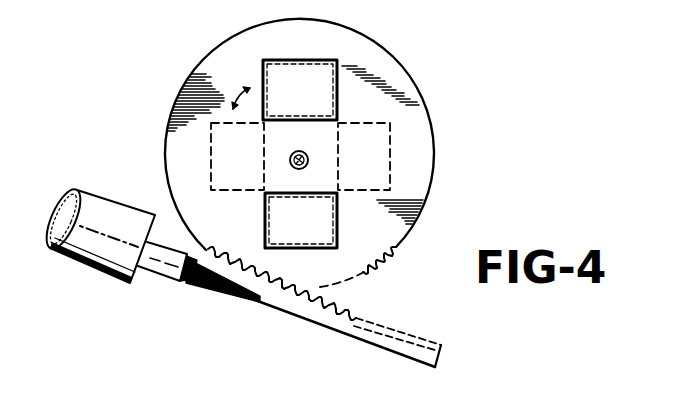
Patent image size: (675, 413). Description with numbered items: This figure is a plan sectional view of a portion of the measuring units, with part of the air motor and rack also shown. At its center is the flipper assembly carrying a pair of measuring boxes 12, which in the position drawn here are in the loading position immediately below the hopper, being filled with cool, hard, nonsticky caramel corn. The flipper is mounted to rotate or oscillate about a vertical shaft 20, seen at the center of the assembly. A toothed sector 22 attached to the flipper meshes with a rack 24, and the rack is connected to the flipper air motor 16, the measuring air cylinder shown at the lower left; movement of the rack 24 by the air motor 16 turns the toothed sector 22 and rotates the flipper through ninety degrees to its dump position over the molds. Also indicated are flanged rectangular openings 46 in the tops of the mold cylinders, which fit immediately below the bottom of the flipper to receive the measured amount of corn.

The measuring boxes 12 is at (303, 60).
The flipper air motor 16 is at (126, 213).
The vertical shaft 20 is at (305, 152).
The toothed sector 22 is at (365, 273).
The rack 24 is at (353, 333).
The flanged rectangular opening 46 is at (377, 160).